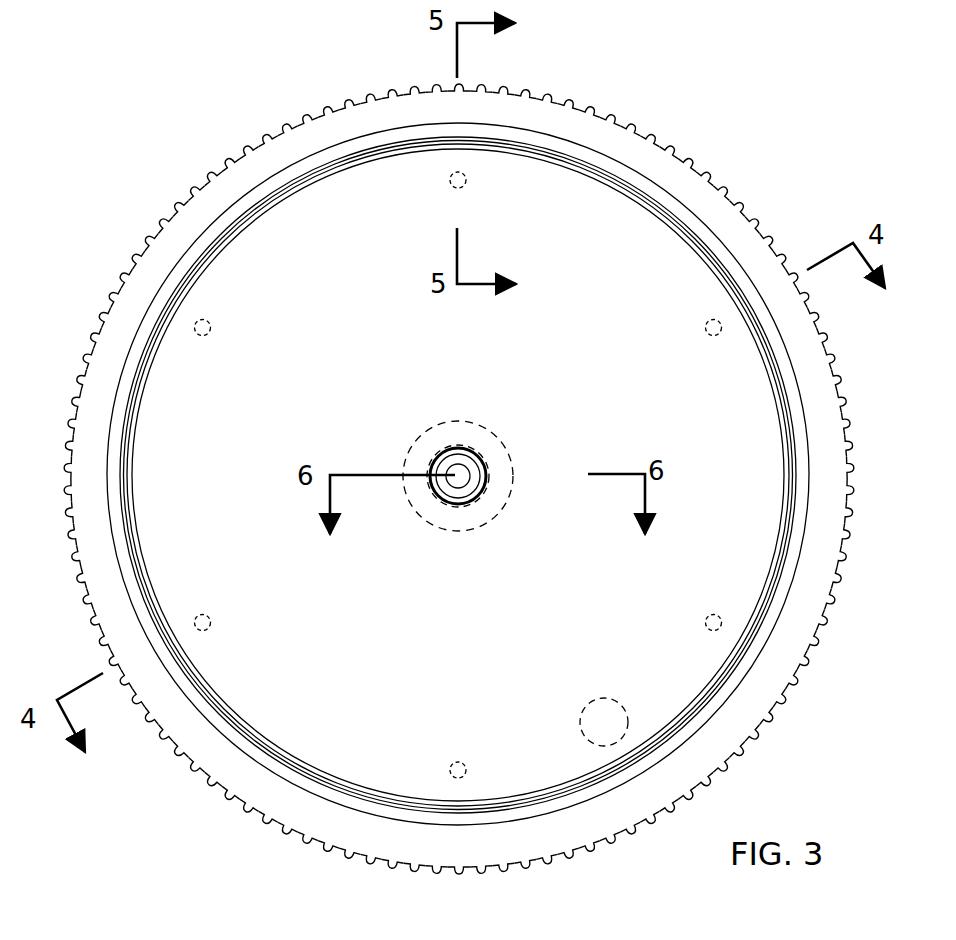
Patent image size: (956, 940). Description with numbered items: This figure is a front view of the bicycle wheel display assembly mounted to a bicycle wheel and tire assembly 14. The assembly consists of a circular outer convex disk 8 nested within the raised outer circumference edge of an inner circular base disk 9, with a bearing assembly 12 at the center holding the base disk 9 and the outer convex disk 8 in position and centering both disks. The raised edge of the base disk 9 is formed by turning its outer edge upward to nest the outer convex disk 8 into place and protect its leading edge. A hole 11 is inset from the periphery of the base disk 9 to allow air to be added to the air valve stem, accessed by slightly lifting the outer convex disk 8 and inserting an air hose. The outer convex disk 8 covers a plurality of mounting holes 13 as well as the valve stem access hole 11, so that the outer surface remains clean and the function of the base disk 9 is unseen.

The outer convex disk 8 is at (770, 432).
The inner circular base disk 9 is at (797, 478).
The bicycle wheel and tire assembly 14 is at (796, 553).
The mounting holes 13 is at (722, 620).
The hole 11 is at (614, 722).
The bearing assembly 12 is at (458, 428).